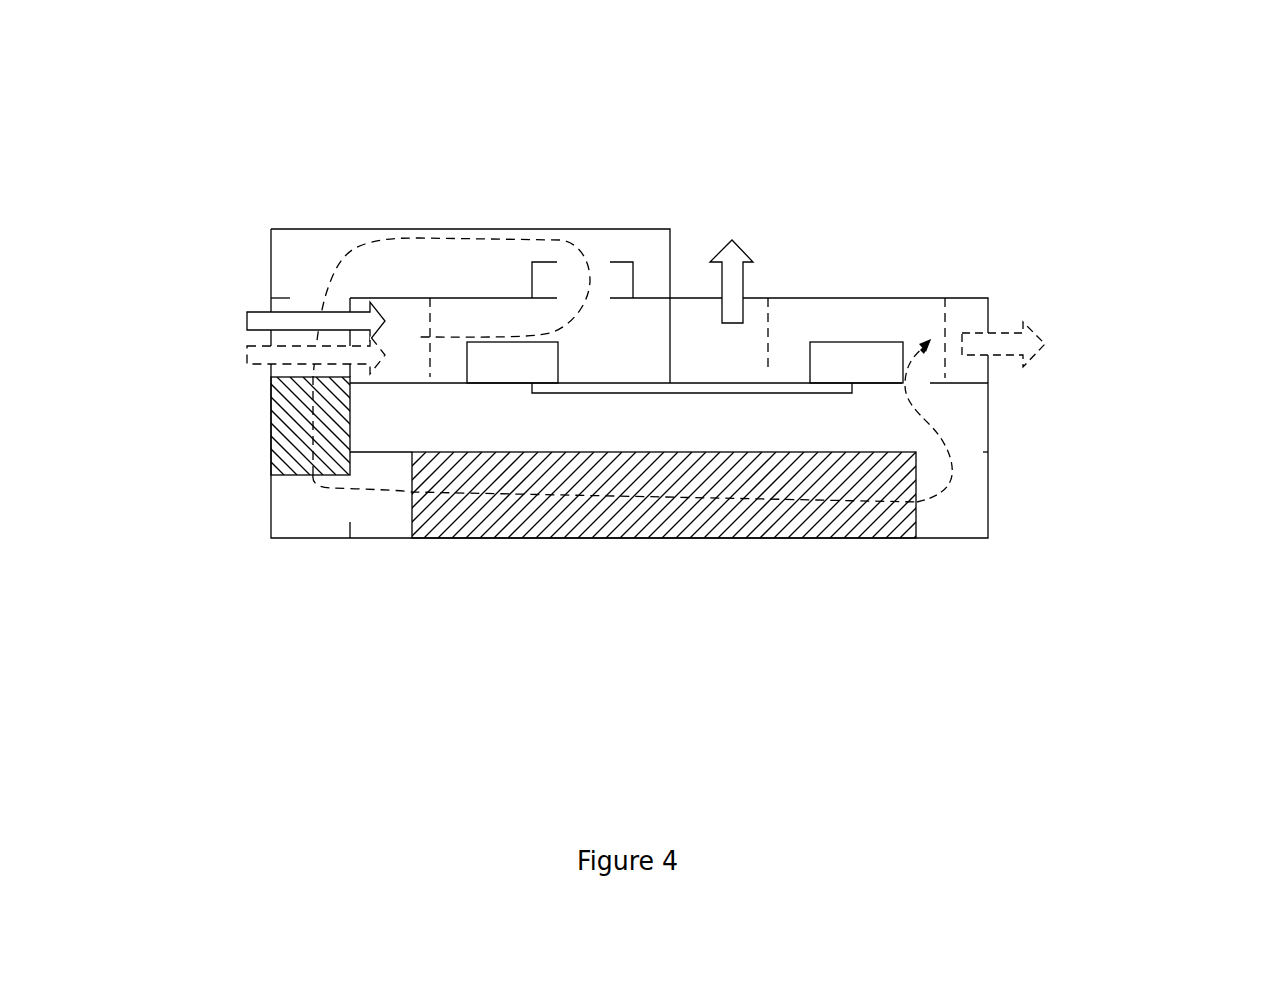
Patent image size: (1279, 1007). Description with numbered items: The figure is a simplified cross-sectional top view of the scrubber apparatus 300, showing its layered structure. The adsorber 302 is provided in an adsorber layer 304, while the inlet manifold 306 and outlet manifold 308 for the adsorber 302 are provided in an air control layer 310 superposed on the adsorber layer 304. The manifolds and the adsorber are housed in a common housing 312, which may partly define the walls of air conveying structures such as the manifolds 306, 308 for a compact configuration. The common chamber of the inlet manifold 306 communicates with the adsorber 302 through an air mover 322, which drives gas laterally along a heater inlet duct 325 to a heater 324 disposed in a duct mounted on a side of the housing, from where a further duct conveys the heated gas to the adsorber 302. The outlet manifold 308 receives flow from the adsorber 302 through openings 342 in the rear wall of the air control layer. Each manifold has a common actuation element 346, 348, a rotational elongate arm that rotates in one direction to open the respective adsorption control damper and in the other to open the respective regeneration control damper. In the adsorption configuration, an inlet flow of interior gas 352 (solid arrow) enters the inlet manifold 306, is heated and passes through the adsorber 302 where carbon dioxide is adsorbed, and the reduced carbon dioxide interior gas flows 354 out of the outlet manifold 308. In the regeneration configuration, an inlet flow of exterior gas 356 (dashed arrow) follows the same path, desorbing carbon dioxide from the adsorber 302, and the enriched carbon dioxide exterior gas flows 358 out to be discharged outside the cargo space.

The scrubber apparatus 300 is at (137, 47).
The adsorber 302 is at (658, 520).
The adsorber layer 304 is at (1062, 494).
The inlet manifold 306 is at (633, 362).
The outlet manifold 308 is at (753, 372).
The air control layer 310 is at (1094, 351).
The common housing 312 is at (378, 540).
The air mover 322 is at (633, 262).
The heater 324 is at (271, 462).
The heater inlet duct 325 is at (456, 250).
The openings 342 is at (918, 383).
The common actuation element 346 is at (490, 372).
The common actuation element 348 is at (863, 365).
The inlet flow of interior gas 352 is at (247, 320).
The reduced carbon dioxide interior gas flow 354 is at (745, 258).
The inlet flow of exterior gas 356 is at (247, 355).
The enriched carbon dioxide exterior gas flow 358 is at (1035, 330).